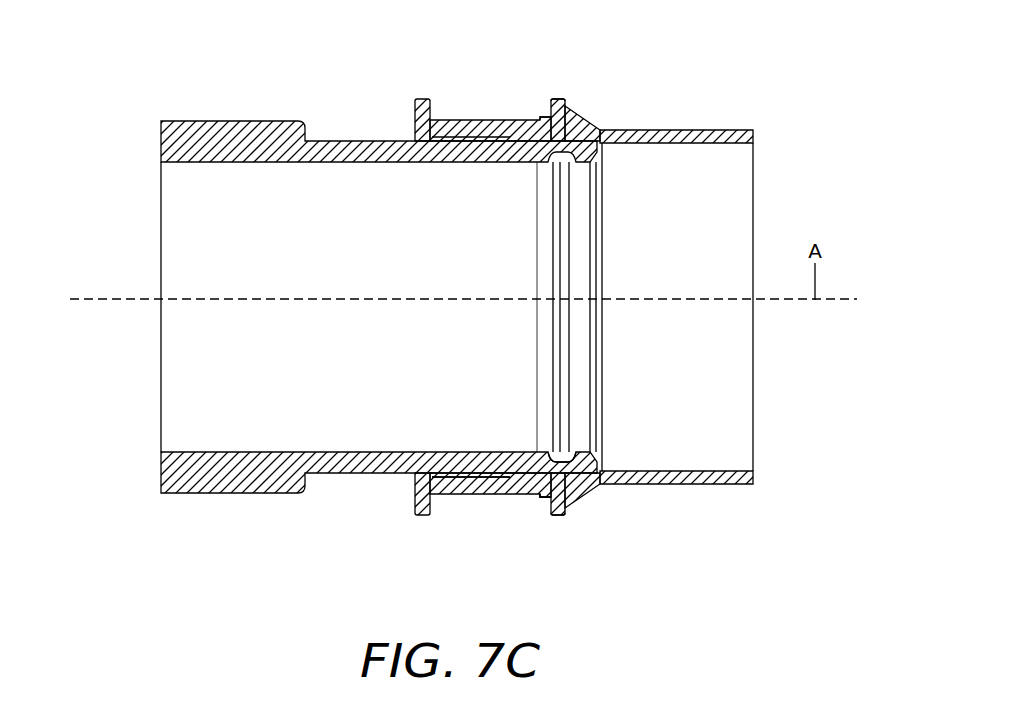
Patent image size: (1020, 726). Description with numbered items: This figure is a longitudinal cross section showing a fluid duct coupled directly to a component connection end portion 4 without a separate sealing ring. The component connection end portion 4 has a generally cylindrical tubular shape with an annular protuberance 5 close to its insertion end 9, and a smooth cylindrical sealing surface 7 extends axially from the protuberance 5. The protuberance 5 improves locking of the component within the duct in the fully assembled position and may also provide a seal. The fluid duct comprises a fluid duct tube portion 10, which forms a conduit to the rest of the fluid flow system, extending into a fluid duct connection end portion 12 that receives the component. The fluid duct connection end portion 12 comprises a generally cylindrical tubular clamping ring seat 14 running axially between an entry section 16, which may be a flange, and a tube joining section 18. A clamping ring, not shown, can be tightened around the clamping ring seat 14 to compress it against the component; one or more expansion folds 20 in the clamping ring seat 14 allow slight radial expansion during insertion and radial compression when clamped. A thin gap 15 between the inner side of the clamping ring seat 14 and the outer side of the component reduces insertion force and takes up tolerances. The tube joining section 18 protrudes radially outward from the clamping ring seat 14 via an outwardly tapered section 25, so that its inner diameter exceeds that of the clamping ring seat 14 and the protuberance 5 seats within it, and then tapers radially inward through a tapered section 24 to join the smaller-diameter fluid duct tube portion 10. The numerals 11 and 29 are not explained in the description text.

The component connection end portion 4 is at (350, 134).
The annular protuberance 5 is at (548, 466).
The cylindrical sealing surface 7 is at (437, 477).
The insertion end 9 is at (604, 372).
The fluid duct tube portion 10 is at (712, 129).
The bore of first pipe 11 is at (460, 453).
The fluid duct connection end portion 12 is at (556, 90).
The clamping ring seat 14 is at (479, 120).
The thin gap 15 is at (450, 139).
The entry section 16 is at (416, 101).
The tube joining section 18 is at (571, 97).
The expansion fold 20 is at (531, 139).
The tapered section 24 is at (592, 130).
The outwardly tapered section 25 is at (545, 491).
The end face of ring 29 is at (556, 516).